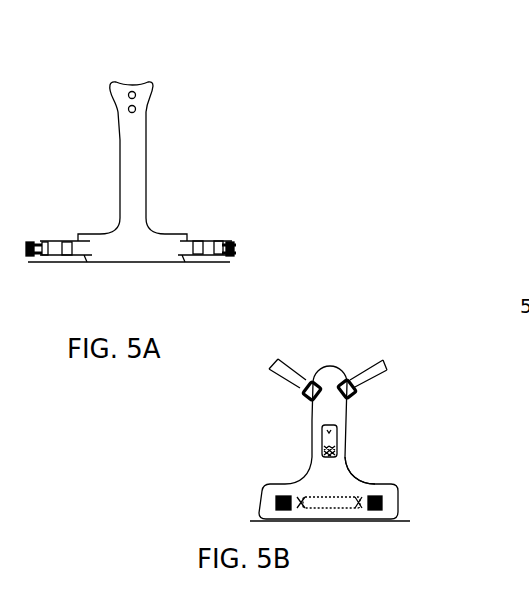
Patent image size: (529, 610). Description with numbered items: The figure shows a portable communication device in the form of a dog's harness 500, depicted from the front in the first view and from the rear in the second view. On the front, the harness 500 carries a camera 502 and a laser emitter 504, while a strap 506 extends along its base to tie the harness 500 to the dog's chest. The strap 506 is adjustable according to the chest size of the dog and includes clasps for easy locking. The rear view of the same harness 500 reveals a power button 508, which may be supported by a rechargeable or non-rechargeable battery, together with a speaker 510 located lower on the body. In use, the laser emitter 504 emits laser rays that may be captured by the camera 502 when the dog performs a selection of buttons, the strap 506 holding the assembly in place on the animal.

In FIG. 5A, the dog's harness 500 is at (342, 82).
In FIG. 5B, the dog's harness 500 is at (388, 322).
In FIG. 5A, the camera 502 is at (133, 82).
In FIG. 5A, the laser emitter 504 is at (135, 108).
In FIG. 5A, the strap 506 is at (200, 237).
In FIG. 5B, the power button 508 is at (336, 424).
In FIG. 5B, the speaker 510 is at (352, 463).